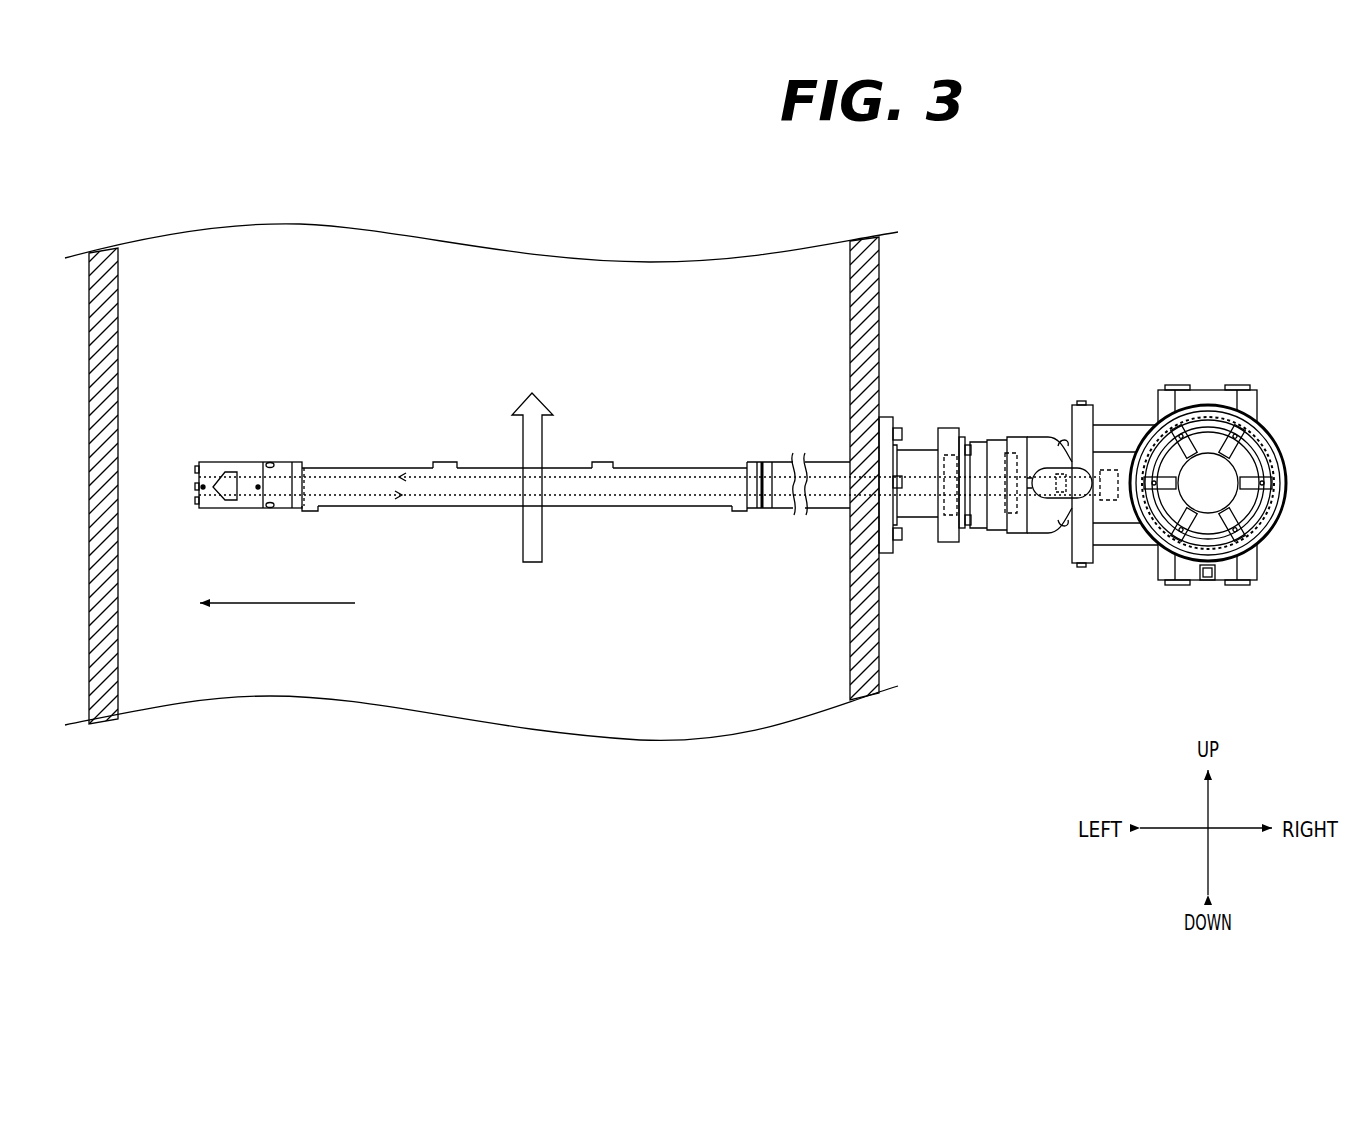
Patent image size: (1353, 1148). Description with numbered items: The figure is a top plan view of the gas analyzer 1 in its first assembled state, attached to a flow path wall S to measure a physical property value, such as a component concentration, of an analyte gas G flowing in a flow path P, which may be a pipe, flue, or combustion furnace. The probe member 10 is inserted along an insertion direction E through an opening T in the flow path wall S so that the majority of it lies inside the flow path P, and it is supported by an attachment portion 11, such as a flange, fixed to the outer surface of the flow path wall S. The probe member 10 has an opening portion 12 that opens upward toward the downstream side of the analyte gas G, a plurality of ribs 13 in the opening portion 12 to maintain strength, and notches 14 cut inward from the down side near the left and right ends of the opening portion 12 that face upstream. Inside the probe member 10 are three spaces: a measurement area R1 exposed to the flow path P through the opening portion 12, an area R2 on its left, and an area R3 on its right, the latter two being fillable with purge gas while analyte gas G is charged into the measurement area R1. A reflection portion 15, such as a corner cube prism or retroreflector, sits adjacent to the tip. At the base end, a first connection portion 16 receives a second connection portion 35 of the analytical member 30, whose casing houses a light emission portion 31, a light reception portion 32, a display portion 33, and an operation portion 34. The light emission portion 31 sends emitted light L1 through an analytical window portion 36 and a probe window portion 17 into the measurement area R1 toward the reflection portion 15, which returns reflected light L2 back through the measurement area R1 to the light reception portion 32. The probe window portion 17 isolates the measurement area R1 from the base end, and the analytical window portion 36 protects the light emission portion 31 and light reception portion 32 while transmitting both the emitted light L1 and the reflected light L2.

The gas analyzer 1 is at (1193, 213).
The probe member 10 is at (822, 512).
The attachment portion 11 is at (895, 418).
The opening portion 12 is at (361, 466).
The ribs 13 is at (447, 461).
The notches 14 is at (309, 513).
The reflection portion 15 is at (216, 504).
The first connection portion 16 is at (950, 427).
The probe window portion 17 is at (950, 518).
The analytical member 30 is at (1213, 388).
The light emission portion 31 is at (1056, 468).
The light reception portion 32 is at (1060, 500).
The display portion 33 is at (1257, 468).
The operation portion 34 is at (1110, 470).
The second connection portion 35 is at (961, 438).
The analytical window portion 36 is at (1011, 453).
The flow path wall S is at (880, 277).
The flow path P is at (791, 309).
The opening T is at (870, 462).
The analyte gas G is at (532, 492).
The insertion direction E is at (277, 620).
The measurement area R1 is at (474, 498).
The area R2 is at (245, 486).
The area R3 is at (824, 478).
The emitted light L1 is at (712, 478).
The reflected light L2 is at (712, 495).